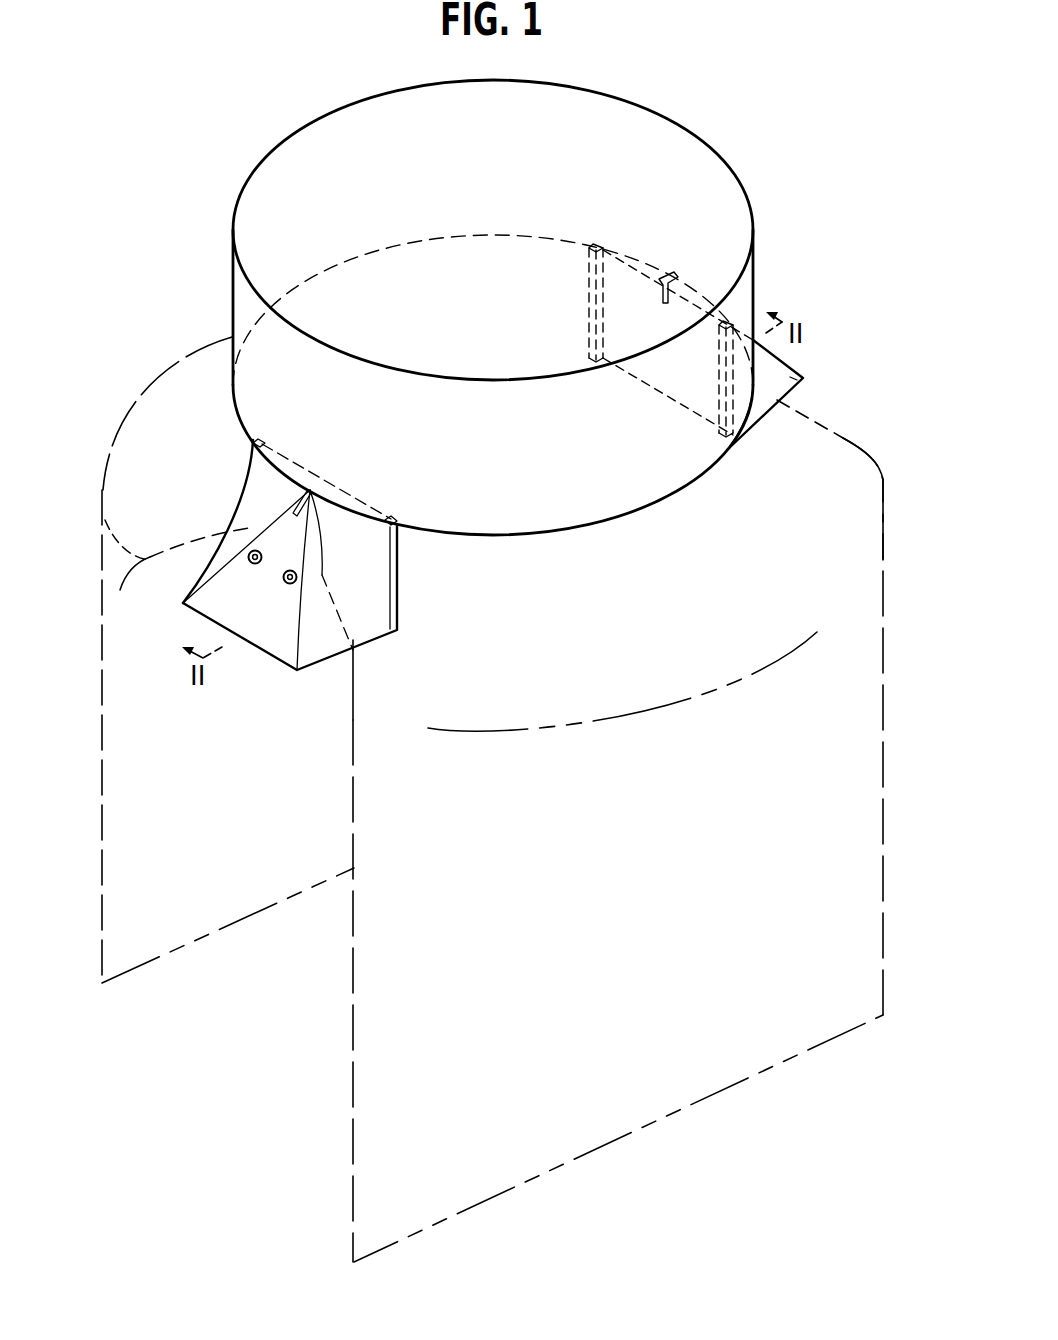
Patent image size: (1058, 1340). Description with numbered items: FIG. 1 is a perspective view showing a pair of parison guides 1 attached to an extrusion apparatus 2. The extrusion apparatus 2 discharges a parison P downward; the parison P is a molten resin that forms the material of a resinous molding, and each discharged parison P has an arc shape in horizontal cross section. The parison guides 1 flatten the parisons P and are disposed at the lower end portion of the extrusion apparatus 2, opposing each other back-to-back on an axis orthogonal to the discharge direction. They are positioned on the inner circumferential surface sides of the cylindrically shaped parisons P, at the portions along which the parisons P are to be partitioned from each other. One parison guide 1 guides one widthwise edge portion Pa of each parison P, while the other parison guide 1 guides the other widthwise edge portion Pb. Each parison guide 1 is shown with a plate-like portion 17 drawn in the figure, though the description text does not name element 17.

The parison guide 1 is at (262, 655).
The extrusion apparatus 2 is at (724, 155).
The plate portion 17 is at (262, 483).
The parison P is at (177, 370).
The widthwise edge portion Pa is at (102, 515).
The widthwise edge portion Pb is at (885, 505).